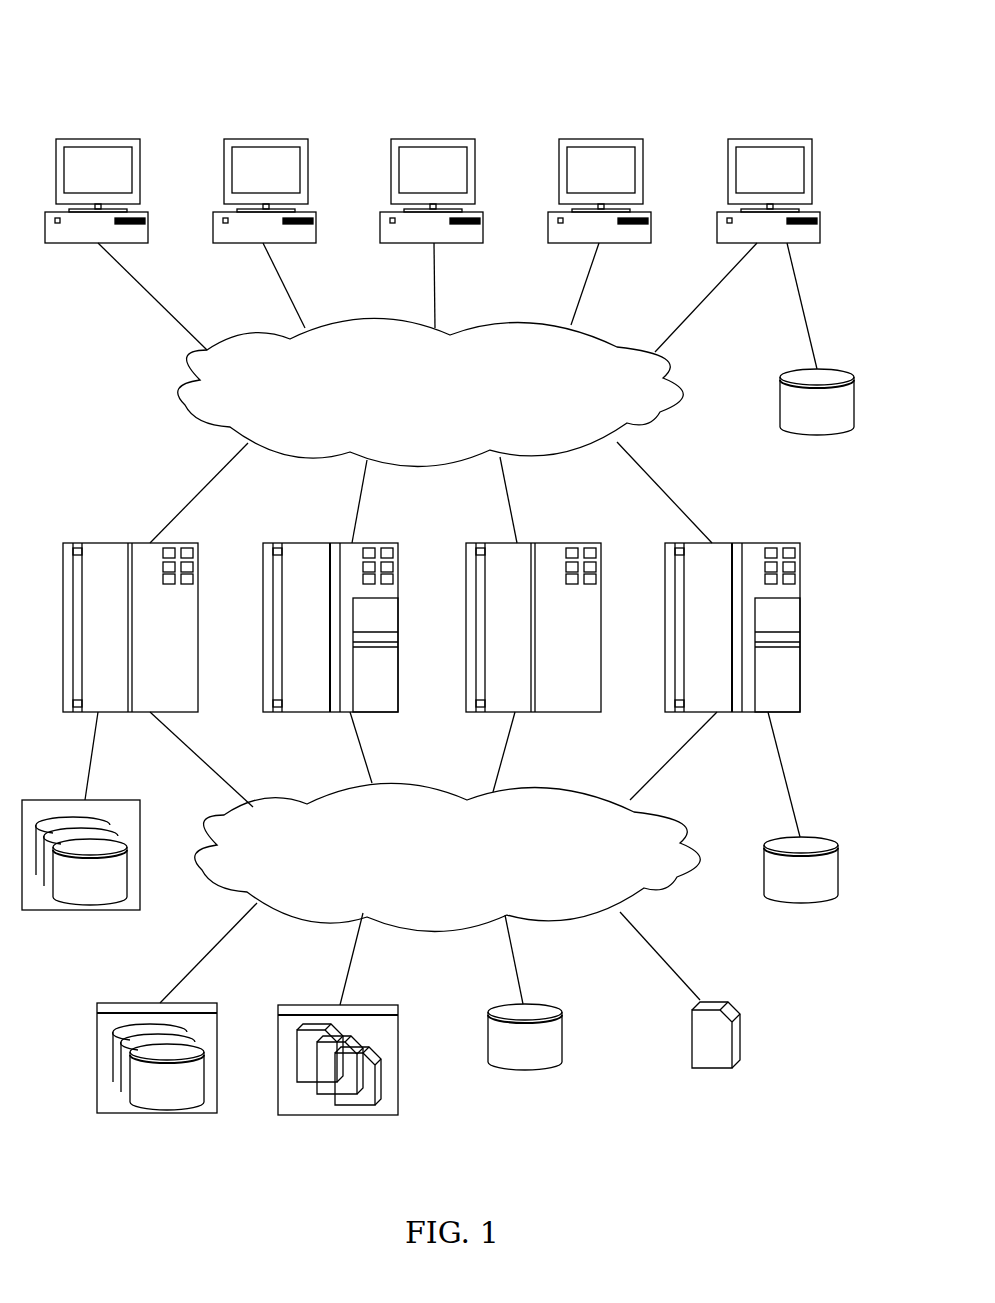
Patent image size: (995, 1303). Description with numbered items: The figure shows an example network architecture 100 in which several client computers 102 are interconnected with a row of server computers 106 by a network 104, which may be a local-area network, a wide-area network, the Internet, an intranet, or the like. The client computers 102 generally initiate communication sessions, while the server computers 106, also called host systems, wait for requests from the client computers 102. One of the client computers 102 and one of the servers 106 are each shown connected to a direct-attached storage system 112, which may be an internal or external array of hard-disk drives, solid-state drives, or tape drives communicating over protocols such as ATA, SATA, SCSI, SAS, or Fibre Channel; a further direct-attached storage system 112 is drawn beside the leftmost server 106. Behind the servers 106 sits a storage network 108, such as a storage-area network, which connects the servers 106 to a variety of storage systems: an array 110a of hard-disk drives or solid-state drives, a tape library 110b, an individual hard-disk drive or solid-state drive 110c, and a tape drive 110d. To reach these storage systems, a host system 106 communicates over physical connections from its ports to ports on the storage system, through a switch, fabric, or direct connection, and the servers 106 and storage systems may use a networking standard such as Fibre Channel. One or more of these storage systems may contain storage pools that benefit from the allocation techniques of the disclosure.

The network architecture 100 is at (165, 72).
The client computer 102 is at (114, 178).
The network 104 is at (603, 408).
The server computer 106 is at (124, 633).
The storage network 108 is at (584, 868).
The array of hard-disk drives or solid-state drives 110a is at (157, 1113).
The tape library 110b is at (340, 1115).
The individual hard-disk drive or solid-state drive 110c is at (523, 1062).
The tape drive 110d is at (713, 1070).
The direct-attached storage system 112 is at (82, 910).